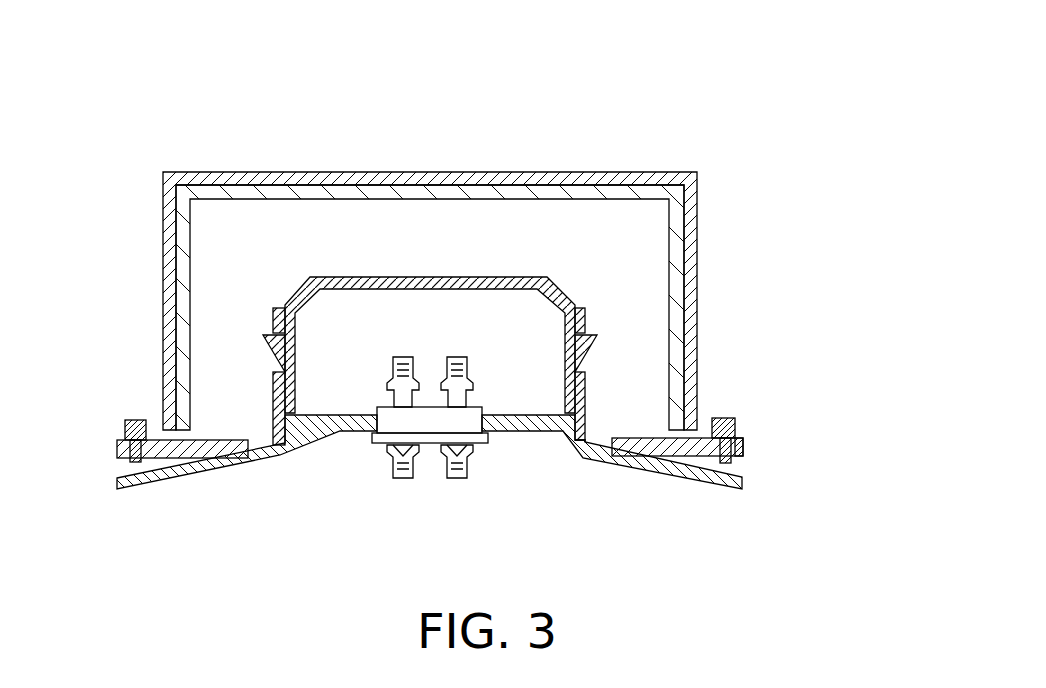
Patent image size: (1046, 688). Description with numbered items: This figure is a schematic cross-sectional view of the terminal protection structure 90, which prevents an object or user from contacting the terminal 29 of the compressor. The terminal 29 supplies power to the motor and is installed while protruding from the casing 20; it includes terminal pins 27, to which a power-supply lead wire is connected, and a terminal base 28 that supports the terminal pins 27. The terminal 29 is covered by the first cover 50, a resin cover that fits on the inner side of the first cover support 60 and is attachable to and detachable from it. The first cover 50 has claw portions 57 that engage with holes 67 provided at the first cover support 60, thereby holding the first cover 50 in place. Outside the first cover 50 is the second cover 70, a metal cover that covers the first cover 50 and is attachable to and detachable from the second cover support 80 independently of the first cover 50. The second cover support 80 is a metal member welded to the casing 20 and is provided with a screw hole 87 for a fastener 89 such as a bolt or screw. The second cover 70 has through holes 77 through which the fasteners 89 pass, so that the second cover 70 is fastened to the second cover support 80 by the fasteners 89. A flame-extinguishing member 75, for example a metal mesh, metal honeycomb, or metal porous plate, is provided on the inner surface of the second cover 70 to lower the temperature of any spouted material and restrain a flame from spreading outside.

The terminal protection structure 90 is at (720, 97).
The second cover 70 is at (308, 172).
The flame-extinguishing member 75 is at (483, 188).
The first cover 50 is at (515, 275).
The claw portions 57 is at (278, 350).
The holes 67 is at (595, 357).
The first cover support 60 is at (583, 421).
The casing 20 is at (708, 482).
The terminal pins 27 is at (403, 355).
The terminal base 28 is at (470, 420).
The terminal 29 is at (456, 443).
The second cover support 80 is at (117, 450).
The through holes 77 is at (742, 438).
The fastener 89 is at (735, 418).
The screw hole 87 is at (742, 458).